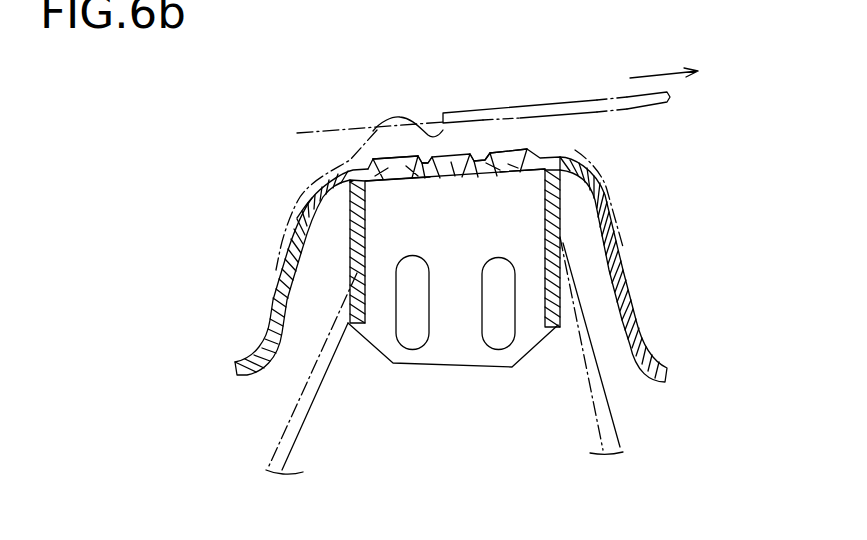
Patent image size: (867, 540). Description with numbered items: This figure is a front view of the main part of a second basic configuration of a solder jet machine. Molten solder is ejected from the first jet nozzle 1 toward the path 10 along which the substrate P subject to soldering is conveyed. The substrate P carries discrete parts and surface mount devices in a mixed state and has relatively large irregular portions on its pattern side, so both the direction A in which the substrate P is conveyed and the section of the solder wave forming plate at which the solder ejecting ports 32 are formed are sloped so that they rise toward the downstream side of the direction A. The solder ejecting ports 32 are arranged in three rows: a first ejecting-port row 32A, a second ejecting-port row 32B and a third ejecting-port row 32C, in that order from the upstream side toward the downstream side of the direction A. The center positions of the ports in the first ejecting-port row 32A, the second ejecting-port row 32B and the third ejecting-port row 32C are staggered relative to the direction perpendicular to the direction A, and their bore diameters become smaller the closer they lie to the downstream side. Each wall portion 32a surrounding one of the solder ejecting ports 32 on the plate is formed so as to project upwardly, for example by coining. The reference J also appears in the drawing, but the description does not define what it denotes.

The first jet nozzle 1 is at (676, 342).
The path 10 is at (320, 130).
The solder ejecting ports 32 is at (449, 198).
The first ejecting-port row 32A is at (398, 183).
The second ejecting-port row 32B is at (453, 180).
The third ejecting-port row 32C is at (517, 170).
The wall portion 32a is at (475, 153).
The substrate P is at (580, 97).
The direction A is at (664, 64).
The joint J is at (280, 194).